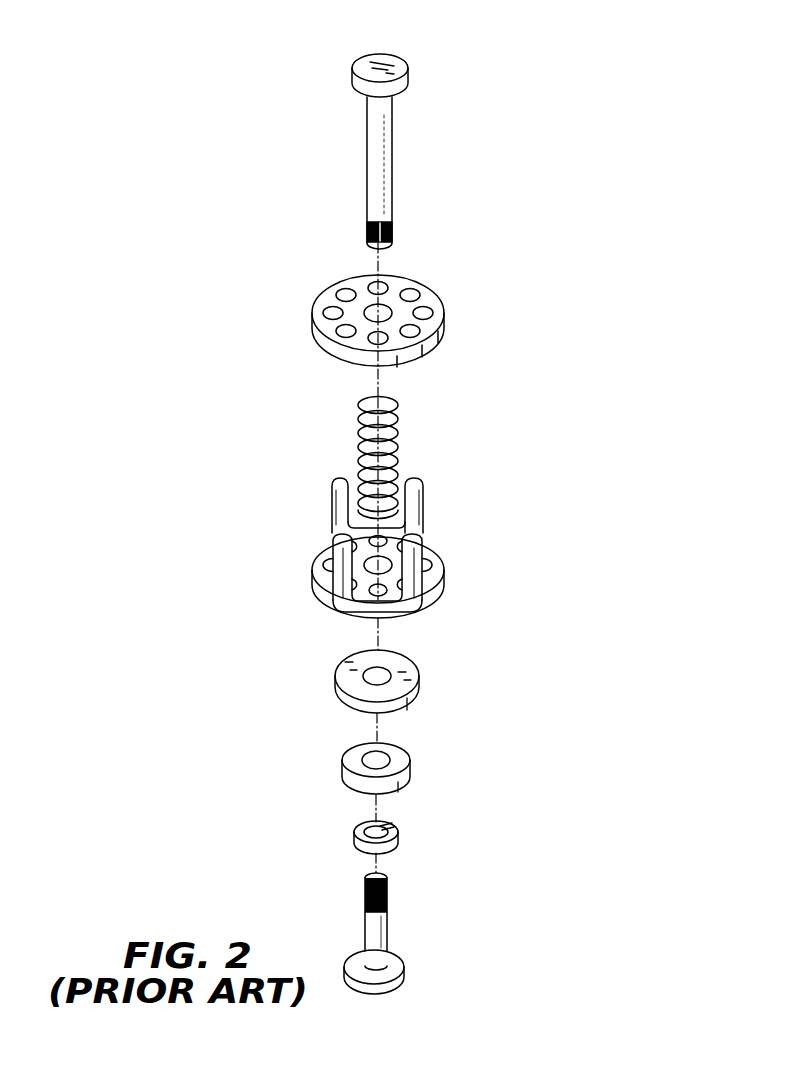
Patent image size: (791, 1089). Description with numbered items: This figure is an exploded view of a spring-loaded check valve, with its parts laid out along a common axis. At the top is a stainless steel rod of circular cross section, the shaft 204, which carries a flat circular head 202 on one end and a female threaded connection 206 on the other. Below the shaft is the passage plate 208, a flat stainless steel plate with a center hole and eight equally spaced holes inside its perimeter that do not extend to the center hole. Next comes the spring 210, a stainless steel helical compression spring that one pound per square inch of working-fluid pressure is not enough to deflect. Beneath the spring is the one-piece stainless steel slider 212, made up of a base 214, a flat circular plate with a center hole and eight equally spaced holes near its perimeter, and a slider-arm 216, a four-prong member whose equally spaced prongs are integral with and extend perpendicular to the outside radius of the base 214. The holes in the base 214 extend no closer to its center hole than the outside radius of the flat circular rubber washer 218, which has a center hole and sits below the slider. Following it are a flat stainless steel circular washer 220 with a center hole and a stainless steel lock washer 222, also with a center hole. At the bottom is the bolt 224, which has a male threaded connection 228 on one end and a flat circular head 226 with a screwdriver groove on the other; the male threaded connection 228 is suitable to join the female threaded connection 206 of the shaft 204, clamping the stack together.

The head 202 is at (352, 80).
The shaft 204 is at (367, 151).
The female threaded connection 206 is at (396, 226).
The passage plate 208 is at (432, 302).
The spring 210 is at (358, 442).
The slider 212 is at (384, 507).
The base 214 is at (440, 583).
The slider-arm 216 is at (342, 500).
The washer 218 is at (415, 671).
The washer 220 is at (405, 760).
The lock washer 222 is at (396, 832).
The bolt 224 is at (400, 925).
The head 226 is at (392, 981).
The male threaded connection 228 is at (363, 910).